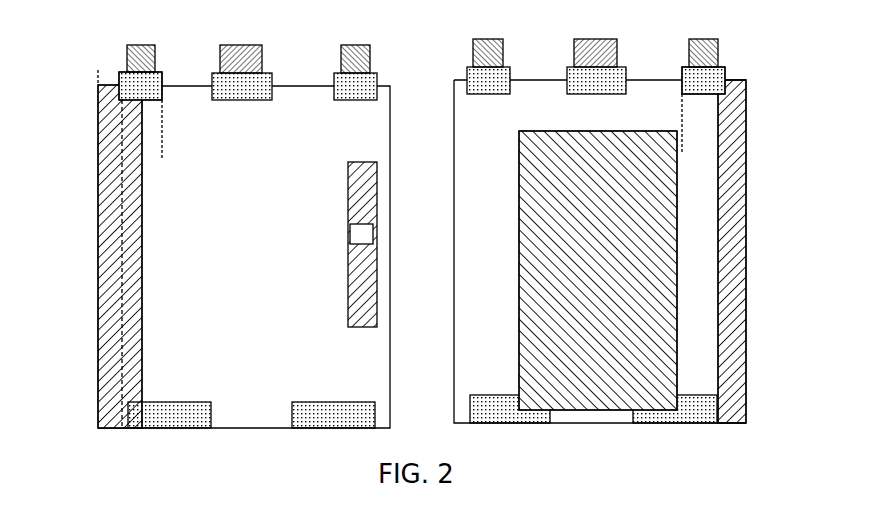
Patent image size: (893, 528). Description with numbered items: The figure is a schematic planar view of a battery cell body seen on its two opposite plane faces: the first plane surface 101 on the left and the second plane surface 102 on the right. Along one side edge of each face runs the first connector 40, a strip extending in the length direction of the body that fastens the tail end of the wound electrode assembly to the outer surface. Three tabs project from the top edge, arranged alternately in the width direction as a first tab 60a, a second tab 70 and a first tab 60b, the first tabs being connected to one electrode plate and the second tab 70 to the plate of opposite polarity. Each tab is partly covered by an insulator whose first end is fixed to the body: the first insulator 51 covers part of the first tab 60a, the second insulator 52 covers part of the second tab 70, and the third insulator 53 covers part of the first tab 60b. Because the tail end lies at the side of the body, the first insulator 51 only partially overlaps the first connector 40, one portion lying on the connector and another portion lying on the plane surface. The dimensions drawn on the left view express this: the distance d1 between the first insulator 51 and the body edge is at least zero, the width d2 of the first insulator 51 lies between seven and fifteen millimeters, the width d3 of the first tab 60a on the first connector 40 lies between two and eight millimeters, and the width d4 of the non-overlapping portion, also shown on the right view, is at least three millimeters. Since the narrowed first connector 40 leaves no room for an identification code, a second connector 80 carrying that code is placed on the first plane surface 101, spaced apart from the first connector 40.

The first connector 40 is at (107, 223).
The first insulator 51 is at (143, 87).
The second insulator 52 is at (243, 82).
The third insulator 53 is at (354, 87).
The first tab 60a is at (145, 55).
The first tab 60b is at (362, 47).
The second tab 70 is at (247, 48).
The second connector 80 is at (367, 287).
The first plane surface 101 is at (245, 360).
The second plane surface 102 is at (622, 128).
The distance between first insulator and edge of battery cell body d1 is at (132, 93).
The width of first insulator d2 is at (174, 145).
The width of first tab on first connector d3 is at (102, 295).
The width of non-overlapping region of first insulator and first connector d4 is at (174, 124).